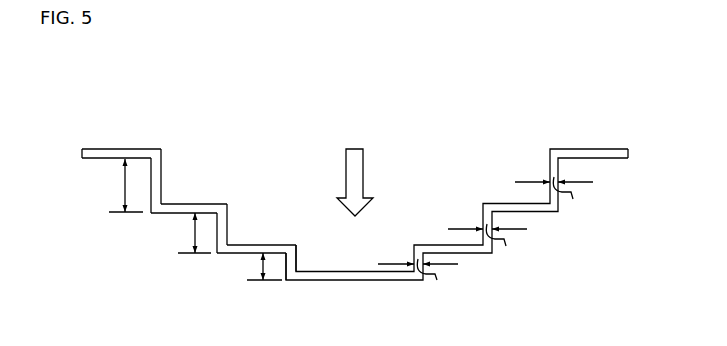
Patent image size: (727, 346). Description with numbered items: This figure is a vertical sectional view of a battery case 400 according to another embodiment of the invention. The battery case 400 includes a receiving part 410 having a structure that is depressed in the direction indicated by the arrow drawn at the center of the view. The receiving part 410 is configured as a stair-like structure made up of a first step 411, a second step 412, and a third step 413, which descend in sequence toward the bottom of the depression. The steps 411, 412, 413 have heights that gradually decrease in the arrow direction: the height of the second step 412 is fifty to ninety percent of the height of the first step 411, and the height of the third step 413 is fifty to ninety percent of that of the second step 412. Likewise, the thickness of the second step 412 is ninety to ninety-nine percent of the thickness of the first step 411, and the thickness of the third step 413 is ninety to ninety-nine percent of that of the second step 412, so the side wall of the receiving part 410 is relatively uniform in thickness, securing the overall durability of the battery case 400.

The battery case 400 is at (73, 146).
The receiving part 410 is at (389, 144).
The first step 411 is at (160, 179).
The second step 412 is at (226, 234).
The third step 413 is at (296, 264).